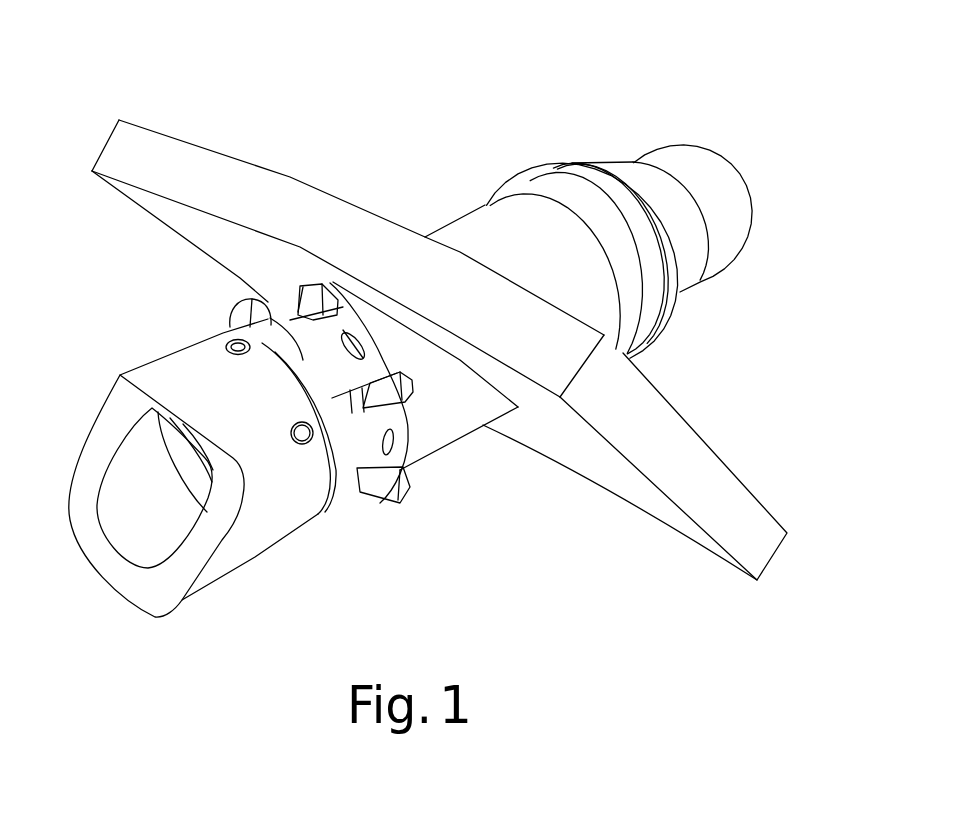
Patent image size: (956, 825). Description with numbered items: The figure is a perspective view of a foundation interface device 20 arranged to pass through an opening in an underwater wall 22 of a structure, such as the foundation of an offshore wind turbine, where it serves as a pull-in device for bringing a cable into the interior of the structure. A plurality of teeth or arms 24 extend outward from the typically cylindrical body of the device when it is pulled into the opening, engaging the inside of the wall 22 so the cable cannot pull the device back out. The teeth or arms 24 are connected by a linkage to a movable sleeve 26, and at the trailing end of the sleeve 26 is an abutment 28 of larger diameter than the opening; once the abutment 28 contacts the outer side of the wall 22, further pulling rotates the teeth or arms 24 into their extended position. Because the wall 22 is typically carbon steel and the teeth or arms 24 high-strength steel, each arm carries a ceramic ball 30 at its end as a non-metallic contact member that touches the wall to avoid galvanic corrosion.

The foundation interface device 20 is at (538, 128).
The underwater wall 22 is at (175, 160).
The teeth or arms 24 is at (383, 513).
The movable sleeve 26 is at (473, 232).
The abutment 28 is at (630, 302).
The ceramic ball 30 is at (412, 387).